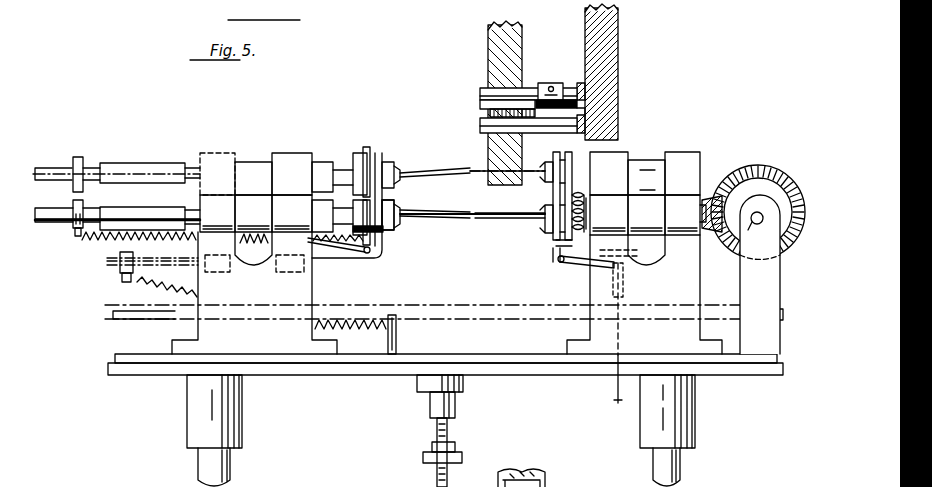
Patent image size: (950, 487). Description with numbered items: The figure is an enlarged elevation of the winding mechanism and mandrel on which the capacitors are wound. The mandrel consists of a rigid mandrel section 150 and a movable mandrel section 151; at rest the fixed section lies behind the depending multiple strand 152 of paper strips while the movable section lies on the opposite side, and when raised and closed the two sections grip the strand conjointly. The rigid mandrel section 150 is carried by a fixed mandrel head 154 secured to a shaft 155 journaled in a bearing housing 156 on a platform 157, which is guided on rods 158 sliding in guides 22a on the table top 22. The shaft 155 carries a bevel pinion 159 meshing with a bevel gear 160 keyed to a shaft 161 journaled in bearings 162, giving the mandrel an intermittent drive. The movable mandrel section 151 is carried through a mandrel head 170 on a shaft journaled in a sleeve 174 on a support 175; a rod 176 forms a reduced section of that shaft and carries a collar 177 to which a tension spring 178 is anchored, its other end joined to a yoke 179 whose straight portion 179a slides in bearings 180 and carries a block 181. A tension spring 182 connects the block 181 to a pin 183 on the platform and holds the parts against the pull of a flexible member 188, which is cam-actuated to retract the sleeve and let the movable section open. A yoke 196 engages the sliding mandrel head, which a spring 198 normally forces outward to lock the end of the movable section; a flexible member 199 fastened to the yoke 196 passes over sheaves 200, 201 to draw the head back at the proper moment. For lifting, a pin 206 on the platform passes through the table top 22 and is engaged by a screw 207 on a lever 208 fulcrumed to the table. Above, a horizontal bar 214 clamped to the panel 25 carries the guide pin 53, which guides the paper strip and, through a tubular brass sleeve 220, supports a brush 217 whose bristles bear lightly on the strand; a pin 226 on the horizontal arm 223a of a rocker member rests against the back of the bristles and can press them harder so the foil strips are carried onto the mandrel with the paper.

The table top 22 is at (138, 372).
The guides 22a is at (202, 432).
The panel 25 is at (605, 45).
The guide pin 53 is at (480, 88).
The rigid mandrel section 150 is at (540, 208).
The movable mandrel section 151 is at (423, 166).
The depending multiple strand 152 is at (497, 140).
The fixed mandrel head 154 is at (553, 236).
The shaft 155 is at (645, 186).
The bearing housing 156 is at (692, 265).
The platform 157 is at (495, 313).
The rods 158 is at (227, 465).
The bevel pinion 159 is at (712, 197).
The bevel gear 160 is at (757, 172).
The shaft 161 is at (760, 229).
The bearings 162 is at (770, 270).
The mandrel head 170 is at (393, 231).
The sleeve 174 is at (176, 207).
The support 175 is at (280, 207).
The rod 176 is at (40, 168).
The collar 177 is at (77, 232).
The tension spring 178 is at (110, 242).
The yoke 179 is at (385, 250).
The straight portion 179a is at (362, 262).
The bearings 180 is at (288, 273).
The block 181 is at (130, 283).
The tension spring 182 is at (150, 304).
The pin 183 is at (397, 342).
The flexible member 188 is at (375, 270).
The yoke 196 is at (549, 254).
The spring 198 is at (557, 264).
The flexible member 199 is at (616, 396).
The sheave 200 is at (583, 264).
The sheave 201 is at (623, 288).
The pin 206 is at (440, 410).
The screw 207 is at (437, 433).
The lever 208 is at (428, 458).
The horizontal bar 214 is at (588, 92).
The brush 217 is at (485, 103).
The tubular brass sleeve 220 is at (551, 83).
The horizontal arm 223a is at (588, 122).
The pin 226 is at (490, 123).